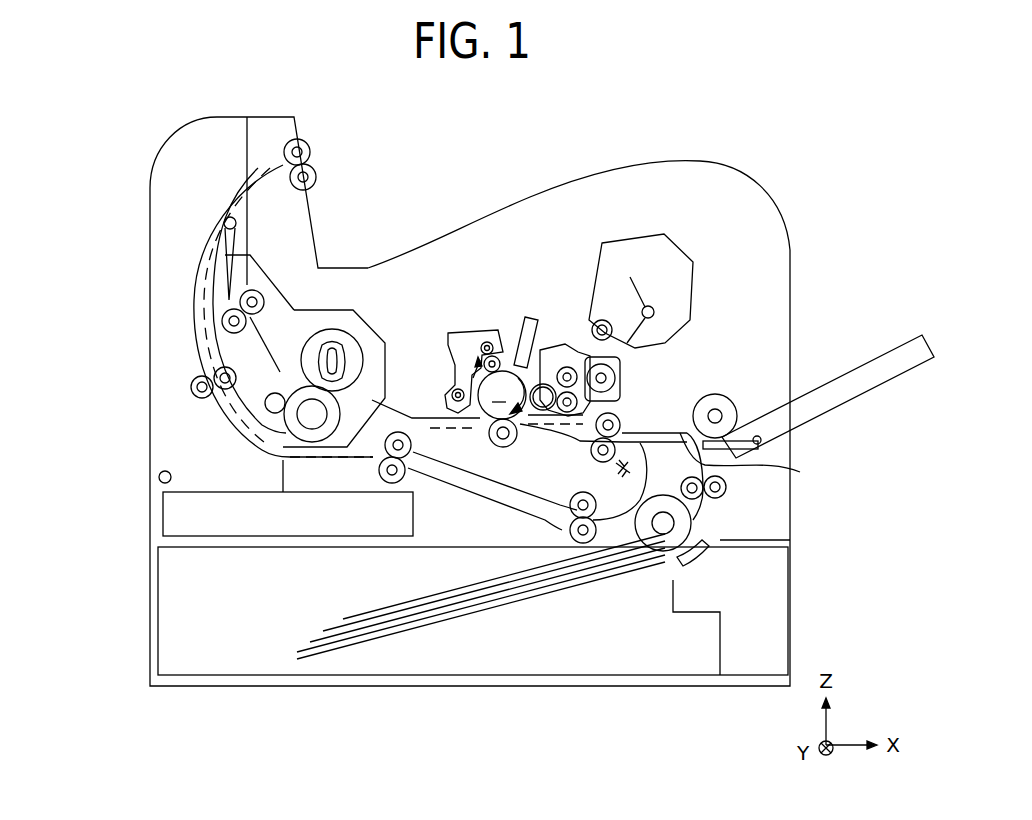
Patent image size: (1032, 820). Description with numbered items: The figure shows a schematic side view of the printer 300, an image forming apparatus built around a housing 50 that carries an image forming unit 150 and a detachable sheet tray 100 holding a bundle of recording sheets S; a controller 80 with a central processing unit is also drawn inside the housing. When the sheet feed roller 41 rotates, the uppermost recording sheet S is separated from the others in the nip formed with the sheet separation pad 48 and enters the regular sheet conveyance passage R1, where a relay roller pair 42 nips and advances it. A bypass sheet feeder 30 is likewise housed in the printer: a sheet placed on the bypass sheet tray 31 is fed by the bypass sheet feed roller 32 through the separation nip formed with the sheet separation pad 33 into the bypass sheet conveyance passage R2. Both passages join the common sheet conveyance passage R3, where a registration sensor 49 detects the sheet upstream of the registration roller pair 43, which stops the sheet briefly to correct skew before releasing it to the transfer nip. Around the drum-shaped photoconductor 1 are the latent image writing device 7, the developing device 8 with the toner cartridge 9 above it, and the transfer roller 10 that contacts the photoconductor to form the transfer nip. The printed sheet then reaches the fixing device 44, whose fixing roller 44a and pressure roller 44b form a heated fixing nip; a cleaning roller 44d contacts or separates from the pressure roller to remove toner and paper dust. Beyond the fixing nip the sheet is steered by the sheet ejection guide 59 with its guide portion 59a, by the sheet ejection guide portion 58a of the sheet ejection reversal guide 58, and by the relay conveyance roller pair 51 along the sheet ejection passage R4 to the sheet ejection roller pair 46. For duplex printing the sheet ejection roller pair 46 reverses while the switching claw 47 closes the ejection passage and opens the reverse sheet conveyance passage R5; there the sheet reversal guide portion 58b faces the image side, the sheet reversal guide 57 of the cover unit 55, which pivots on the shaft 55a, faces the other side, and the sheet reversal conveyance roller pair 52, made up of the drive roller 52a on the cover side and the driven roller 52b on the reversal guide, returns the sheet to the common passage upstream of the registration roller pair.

The printer 300 is at (503, 385).
The image forming unit 150 is at (580, 226).
The housing 50 is at (792, 273).
The sheet tray 100 is at (249, 677).
The recording sheet S is at (377, 610).
The controller 80 is at (163, 510).
The shaft 55a is at (158, 480).
The cover unit 55 is at (150, 217).
The sheet ejection guide 59 is at (310, 267).
The sheet ejection guide portion 58a is at (283, 307).
The switching claw 47 is at (223, 242).
The sheet ejection passage R4 is at (228, 300).
The relay conveyance roller pair 51 is at (253, 300).
The sheet ejection roller pair 46 is at (318, 170).
The sheet ejection reversal guide 58 is at (222, 328).
The sheet reversal guide portion 58b is at (195, 252).
The reverse sheet conveyance passage R5 is at (193, 290).
The sheet reversal conveyance roller pair 52 is at (125, 387).
The drive roller 52a is at (190, 392).
The driven roller 52b is at (212, 368).
The guide portion 59a is at (262, 360).
The sheet reversal guide 57 is at (290, 345).
The fixing device 44 is at (391, 408).
The fixing roller 44a is at (380, 357).
The cleaning roller 44d is at (265, 410).
The pressure roller 44b is at (330, 447).
The photoconductor 1 is at (502, 395).
The transfer roller 10 is at (512, 447).
The latent image writing device 7 is at (532, 316).
The developing device 8 is at (585, 363).
The toner cartridge 9 is at (692, 266).
The registration roller pair 43 is at (624, 416).
The bypass sheet conveyance passage R2 is at (681, 426).
The common sheet conveyance passage R3 is at (641, 443).
The registration sensor 49 is at (613, 477).
The regular sheet conveyance passage R1 is at (700, 525).
The sheet separation pad 48 is at (712, 548).
The sheet feed roller 41 is at (633, 527).
The relay roller pair 42 is at (729, 487).
The bypass sheet feeder 30 is at (807, 383).
The bypass sheet feed roller 32 is at (727, 393).
The sheet separation pad 33 is at (757, 450).
The bypass sheet tray 31 is at (890, 347).